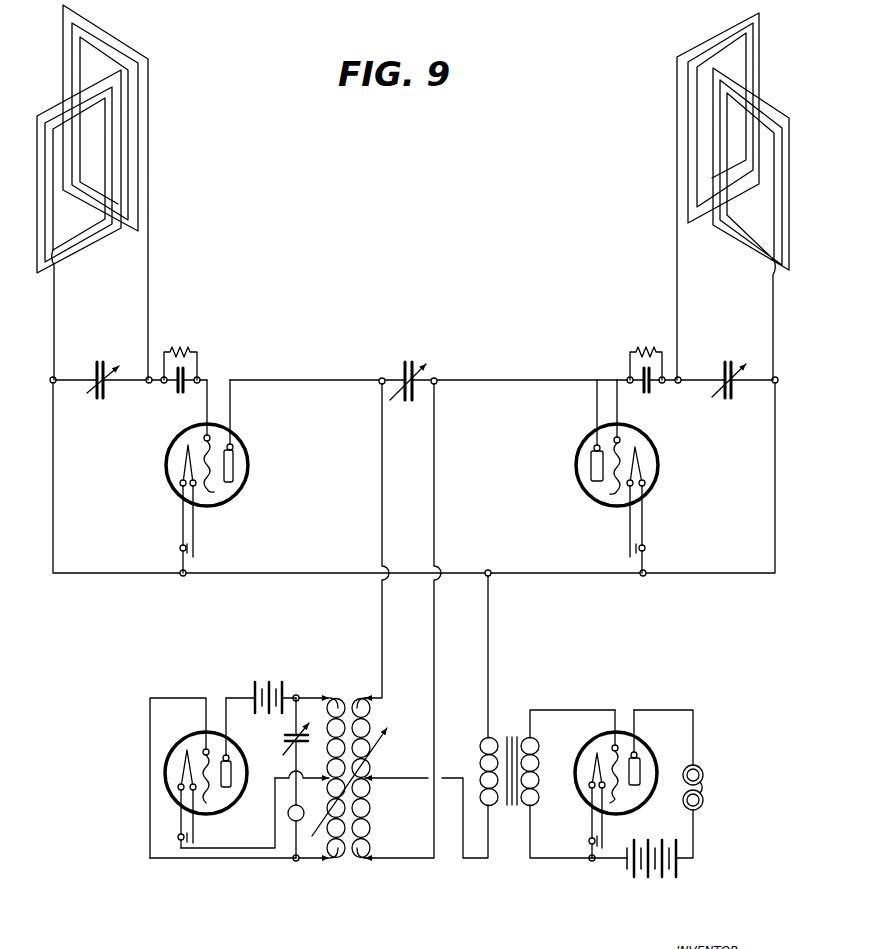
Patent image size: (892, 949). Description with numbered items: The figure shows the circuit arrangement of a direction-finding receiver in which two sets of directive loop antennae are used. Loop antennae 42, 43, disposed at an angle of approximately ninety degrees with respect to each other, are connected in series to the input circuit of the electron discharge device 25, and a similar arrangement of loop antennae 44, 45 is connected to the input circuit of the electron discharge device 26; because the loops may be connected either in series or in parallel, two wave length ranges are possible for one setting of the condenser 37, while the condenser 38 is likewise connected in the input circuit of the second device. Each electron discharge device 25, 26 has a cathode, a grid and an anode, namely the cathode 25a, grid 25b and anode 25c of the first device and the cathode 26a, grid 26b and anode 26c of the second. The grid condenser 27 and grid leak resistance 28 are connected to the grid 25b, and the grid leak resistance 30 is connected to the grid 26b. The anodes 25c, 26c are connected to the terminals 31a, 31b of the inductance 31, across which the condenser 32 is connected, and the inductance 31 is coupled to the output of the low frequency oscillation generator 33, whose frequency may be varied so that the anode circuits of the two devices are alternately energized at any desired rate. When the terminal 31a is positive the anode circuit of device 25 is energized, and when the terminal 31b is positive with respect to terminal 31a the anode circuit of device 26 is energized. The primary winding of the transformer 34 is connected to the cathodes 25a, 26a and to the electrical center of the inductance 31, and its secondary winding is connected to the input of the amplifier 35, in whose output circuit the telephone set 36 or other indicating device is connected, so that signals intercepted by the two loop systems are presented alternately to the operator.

The electron discharge device 25 is at (211, 476).
The cathode electrode 25a is at (156, 509).
The grid electrode 25b is at (211, 487).
The anode electrode 25c is at (231, 472).
The electron discharge device 26 is at (621, 460).
The cathode electrode 26a is at (641, 467).
The grid electrode 26b is at (610, 428).
The anode electrode 26c is at (592, 463).
The grid condenser 27 is at (194, 371).
The grid leak resistance unit 28 is at (184, 343).
The grid leak resistance unit 30 is at (646, 345).
The inductance 31 is at (363, 777).
The terminal of the inductance 31a is at (362, 689).
The terminal of the inductance 31b is at (361, 864).
The condenser 32 is at (411, 349).
The low frequency oscillation generator 33 is at (160, 776).
The transformer 34 is at (511, 722).
The amplifier 35 is at (653, 736).
The telephone set 36 is at (711, 772).
The condenser 37 is at (105, 405).
The condenser 38 is at (732, 356).
The loop antenna 42 is at (117, 34).
The loop antenna 43 is at (78, 254).
The loop antenna 44 is at (712, 35).
The loop antenna 45 is at (740, 244).